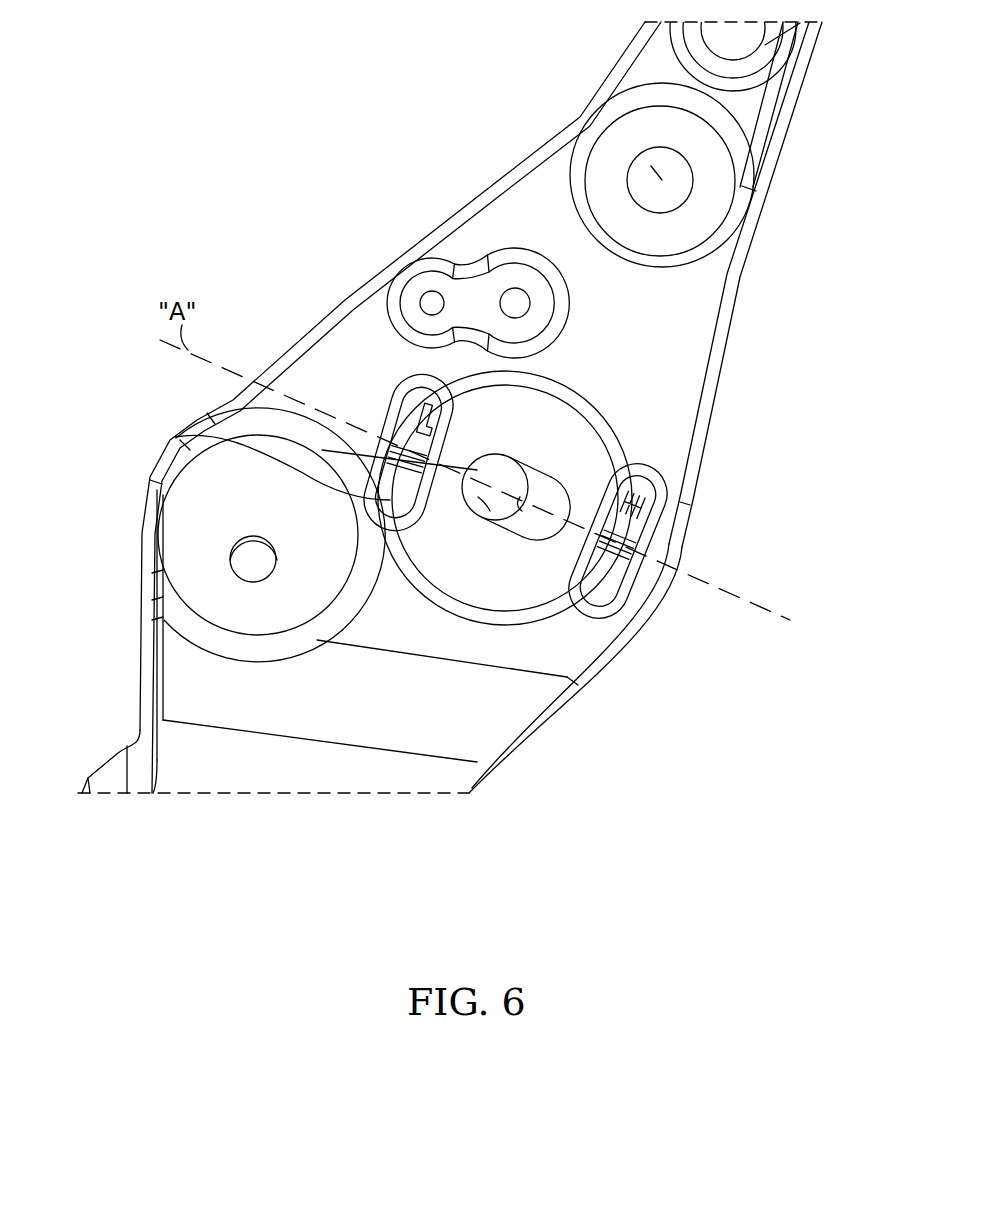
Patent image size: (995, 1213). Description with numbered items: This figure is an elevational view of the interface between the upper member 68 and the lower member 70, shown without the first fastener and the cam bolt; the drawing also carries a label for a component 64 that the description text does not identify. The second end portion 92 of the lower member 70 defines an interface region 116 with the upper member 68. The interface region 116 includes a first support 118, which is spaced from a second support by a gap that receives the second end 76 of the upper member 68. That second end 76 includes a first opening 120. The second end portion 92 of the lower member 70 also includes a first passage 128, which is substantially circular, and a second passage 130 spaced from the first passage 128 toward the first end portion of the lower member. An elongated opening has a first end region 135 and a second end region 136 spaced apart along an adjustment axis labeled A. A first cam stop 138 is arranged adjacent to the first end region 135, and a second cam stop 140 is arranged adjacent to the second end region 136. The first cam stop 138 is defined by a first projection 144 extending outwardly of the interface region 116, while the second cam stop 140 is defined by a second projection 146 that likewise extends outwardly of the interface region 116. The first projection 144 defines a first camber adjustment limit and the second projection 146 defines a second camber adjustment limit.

The mounting bracket 64 is at (337, 72).
The upper member 68 is at (600, 42).
The first passage 128 is at (644, 175).
The second end 76 is at (778, 124).
The second end portion 92 is at (755, 189).
The first support 118 is at (740, 203).
The interface region 116 is at (688, 340).
The second cam stop 140 is at (415, 443).
The first opening 120 is at (329, 413).
The second projection 146 is at (393, 483).
The second passage 130 is at (507, 499).
The second end region 136 is at (490, 498).
The first cam stop 138 is at (632, 504).
The first projection 144 is at (665, 555).
The first end region 135 is at (540, 545).
The lower member 70 is at (115, 696).